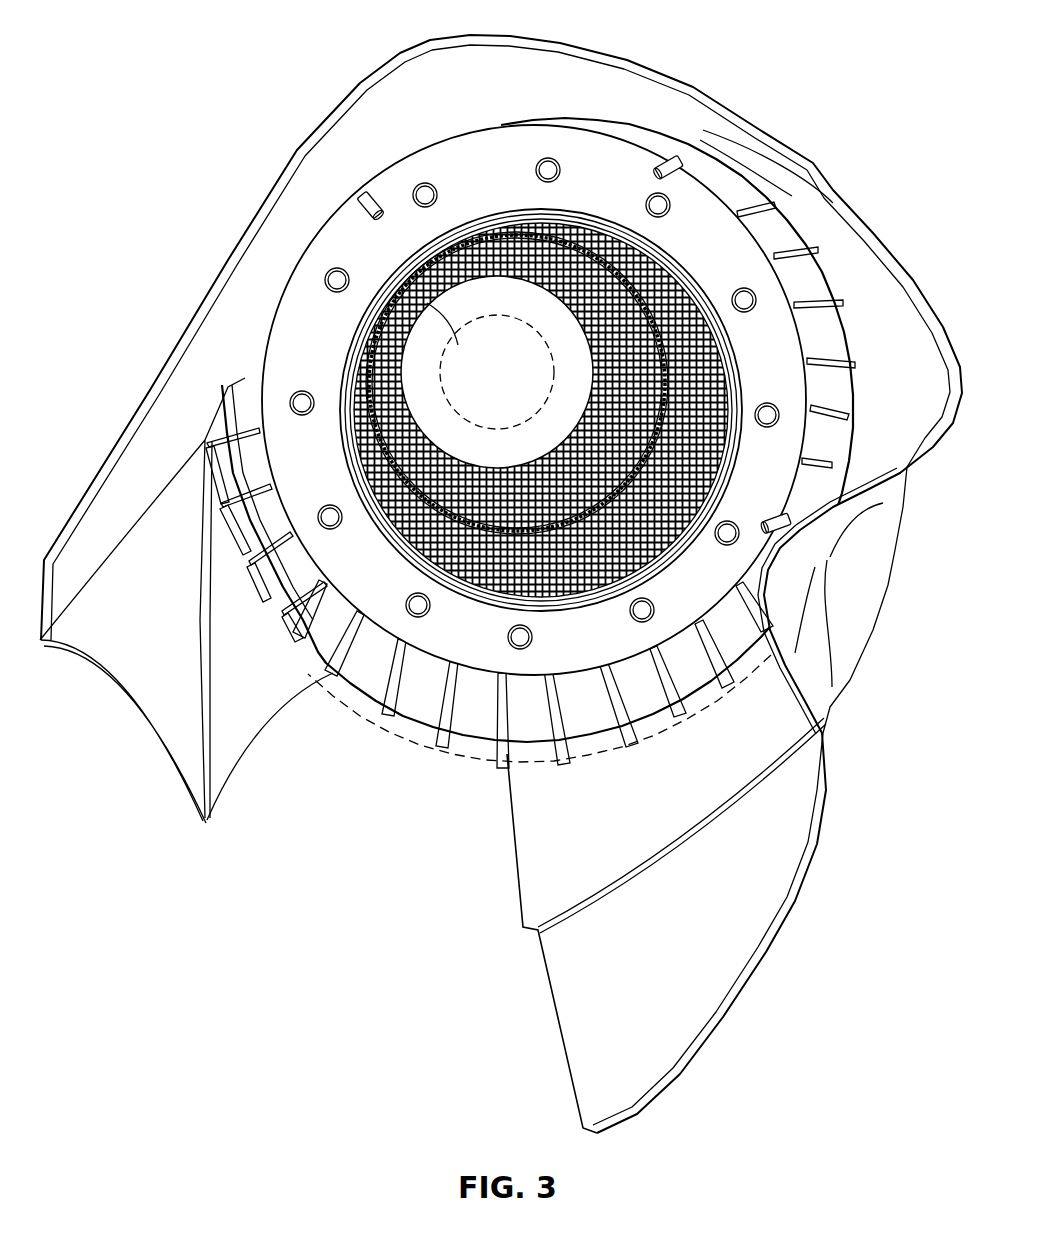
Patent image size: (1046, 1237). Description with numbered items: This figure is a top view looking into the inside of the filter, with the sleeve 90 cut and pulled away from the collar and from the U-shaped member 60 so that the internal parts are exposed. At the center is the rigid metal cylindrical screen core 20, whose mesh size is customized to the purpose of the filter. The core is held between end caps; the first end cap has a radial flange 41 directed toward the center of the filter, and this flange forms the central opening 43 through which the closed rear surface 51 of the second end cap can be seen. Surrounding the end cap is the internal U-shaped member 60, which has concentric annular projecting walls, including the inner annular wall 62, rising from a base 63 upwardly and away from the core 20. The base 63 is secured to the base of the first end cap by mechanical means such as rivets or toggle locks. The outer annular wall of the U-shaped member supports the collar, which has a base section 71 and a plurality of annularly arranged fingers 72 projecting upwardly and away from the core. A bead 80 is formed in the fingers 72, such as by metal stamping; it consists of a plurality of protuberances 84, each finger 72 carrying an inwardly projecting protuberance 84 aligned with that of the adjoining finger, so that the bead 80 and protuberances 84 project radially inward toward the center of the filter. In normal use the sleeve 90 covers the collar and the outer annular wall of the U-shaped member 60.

The cylindrical screen core 20 is at (585, 260).
The radial flange 41 is at (667, 316).
The central opening 43 is at (490, 453).
The closed rear surface 51 is at (404, 283).
The U-shaped member 60 is at (598, 153).
The inner annular projecting wall 62 is at (738, 398).
The base 63 is at (773, 330).
The base section 71 is at (335, 600).
The fingers 72 is at (240, 520).
The bead 80 is at (648, 703).
The protuberances 84 is at (742, 650).
The sleeve 90 is at (200, 727).